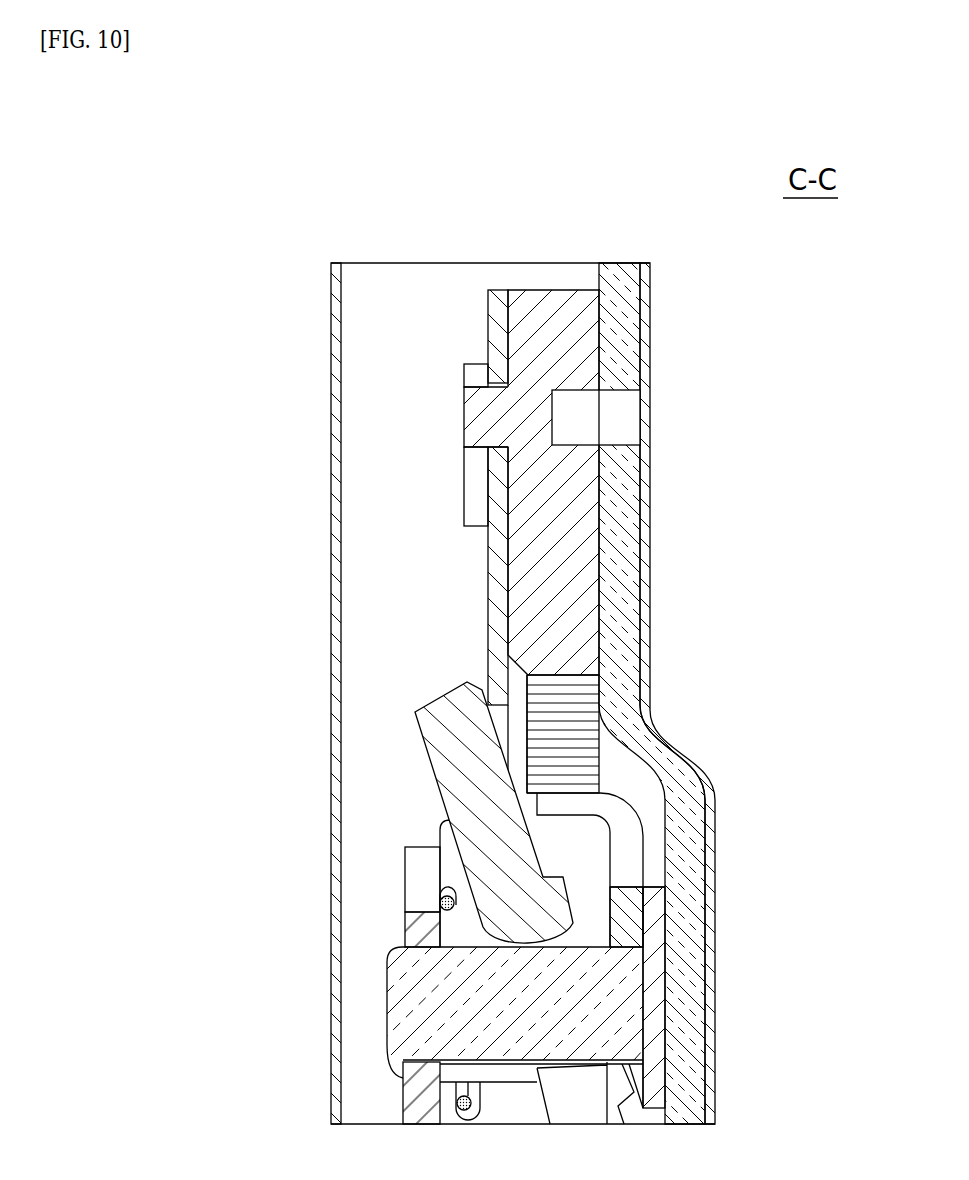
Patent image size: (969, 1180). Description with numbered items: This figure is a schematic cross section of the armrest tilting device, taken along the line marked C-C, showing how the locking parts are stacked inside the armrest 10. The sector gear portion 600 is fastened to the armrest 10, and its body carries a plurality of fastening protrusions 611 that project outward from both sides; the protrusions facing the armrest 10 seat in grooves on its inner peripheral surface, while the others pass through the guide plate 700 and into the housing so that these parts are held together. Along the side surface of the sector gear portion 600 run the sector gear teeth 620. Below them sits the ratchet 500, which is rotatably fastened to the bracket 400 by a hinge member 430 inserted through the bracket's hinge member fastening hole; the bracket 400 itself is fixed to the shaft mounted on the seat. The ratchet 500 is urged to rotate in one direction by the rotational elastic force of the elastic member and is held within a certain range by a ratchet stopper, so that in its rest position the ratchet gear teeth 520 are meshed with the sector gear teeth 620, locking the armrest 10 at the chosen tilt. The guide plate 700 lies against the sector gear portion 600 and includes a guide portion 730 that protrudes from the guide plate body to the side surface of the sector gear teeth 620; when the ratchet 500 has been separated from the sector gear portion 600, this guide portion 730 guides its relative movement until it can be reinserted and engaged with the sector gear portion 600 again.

The armrest 10 is at (337, 297).
The bracket 400 is at (627, 920).
The hinge member 430 is at (620, 1000).
The ratchet 500 is at (512, 852).
The ratchet gear teeth 520 is at (440, 695).
The sector gear portion 600 is at (570, 520).
The fastening protrusion 611 is at (493, 418).
The sector gear teeth 620 is at (563, 712).
The guide plate 700 is at (496, 312).
The guide portion 730 is at (508, 708).